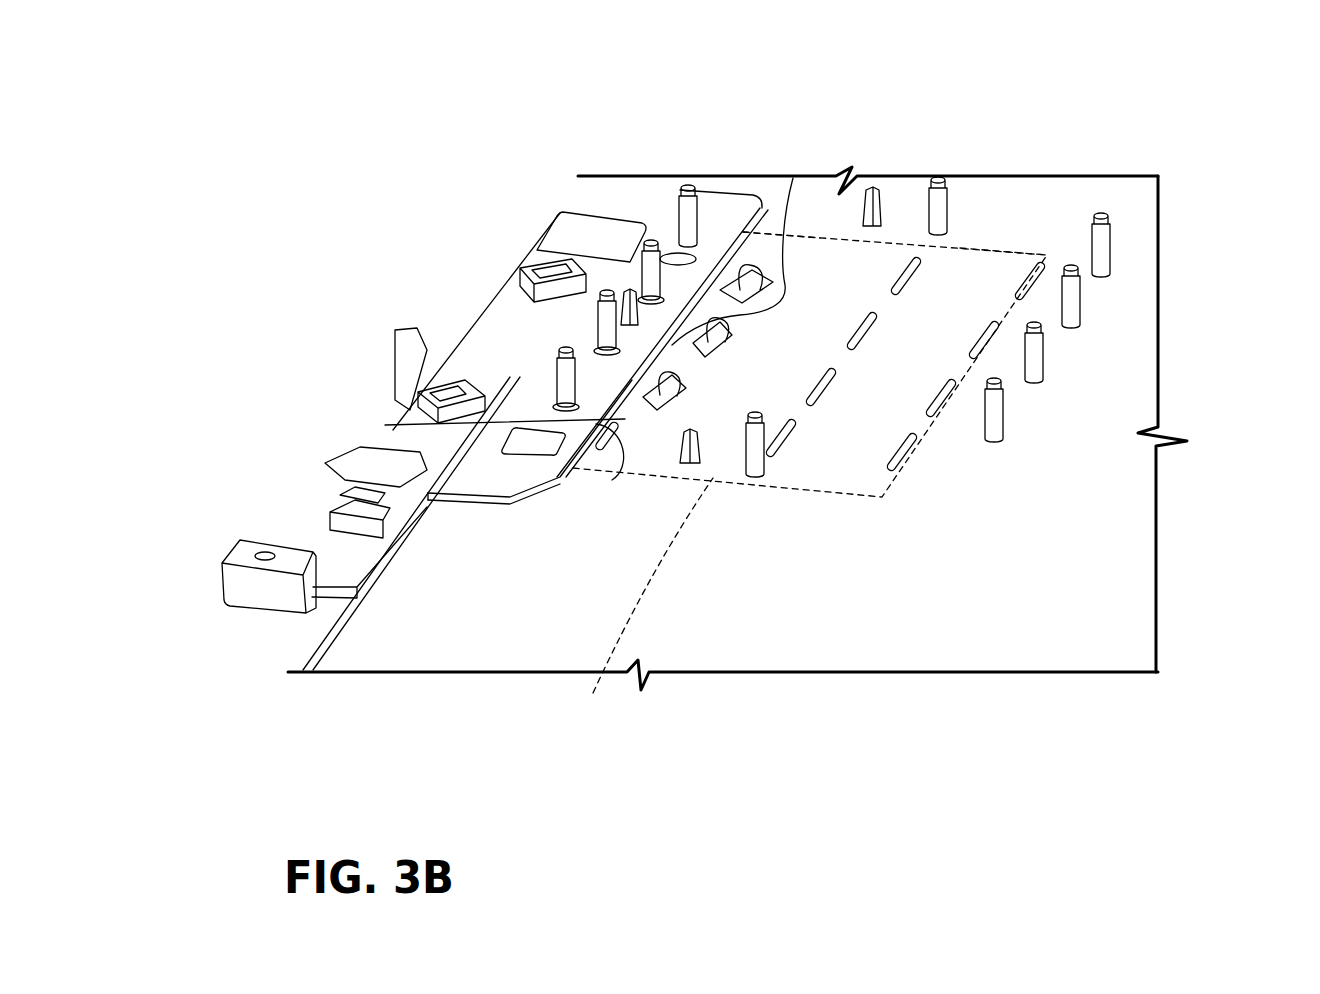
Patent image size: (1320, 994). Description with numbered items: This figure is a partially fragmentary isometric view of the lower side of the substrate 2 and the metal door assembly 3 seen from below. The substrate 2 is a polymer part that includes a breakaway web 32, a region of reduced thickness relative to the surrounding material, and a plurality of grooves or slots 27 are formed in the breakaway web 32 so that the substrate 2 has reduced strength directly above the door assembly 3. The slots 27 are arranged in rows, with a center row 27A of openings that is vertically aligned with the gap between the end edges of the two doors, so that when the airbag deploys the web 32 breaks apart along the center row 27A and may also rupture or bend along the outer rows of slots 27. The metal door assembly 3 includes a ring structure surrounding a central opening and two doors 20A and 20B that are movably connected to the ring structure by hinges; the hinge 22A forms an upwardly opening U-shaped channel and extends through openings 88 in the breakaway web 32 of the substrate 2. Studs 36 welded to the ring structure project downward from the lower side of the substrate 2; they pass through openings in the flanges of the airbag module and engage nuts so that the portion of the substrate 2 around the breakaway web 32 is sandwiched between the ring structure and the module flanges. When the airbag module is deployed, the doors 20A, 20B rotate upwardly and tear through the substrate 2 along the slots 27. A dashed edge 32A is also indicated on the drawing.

The substrate 2 is at (768, 193).
The metal door assembly 3 is at (633, 146).
The door 20A is at (977, 252).
The door 20B is at (800, 233).
The hinge 22A is at (735, 270).
The slots 27 is at (748, 272).
The center row of openings 27A is at (772, 467).
The breakaway web 32 is at (848, 460).
The floor edge 32A is at (635, 606).
The studs 36 is at (688, 212).
The openings 88 is at (727, 270).